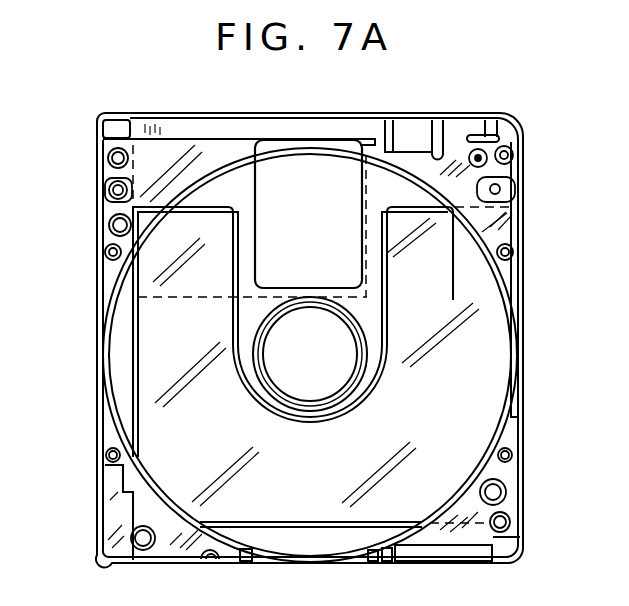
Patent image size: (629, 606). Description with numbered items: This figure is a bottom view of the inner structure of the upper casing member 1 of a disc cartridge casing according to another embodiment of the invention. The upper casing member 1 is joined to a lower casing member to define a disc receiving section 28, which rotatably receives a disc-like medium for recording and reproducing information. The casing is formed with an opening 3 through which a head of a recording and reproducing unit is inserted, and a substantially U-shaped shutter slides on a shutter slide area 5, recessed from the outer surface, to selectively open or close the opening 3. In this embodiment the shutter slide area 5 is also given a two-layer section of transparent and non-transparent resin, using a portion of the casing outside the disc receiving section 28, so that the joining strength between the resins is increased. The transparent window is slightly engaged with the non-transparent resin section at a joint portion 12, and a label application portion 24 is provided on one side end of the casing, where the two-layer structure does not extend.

The upper casing member 1 is at (535, 155).
The opening 3 is at (305, 162).
The shutter slide area 5 is at (188, 300).
The joint portion 12 is at (207, 208).
The label application portion 24 is at (97, 192).
The disc receiving section 28 is at (475, 348).